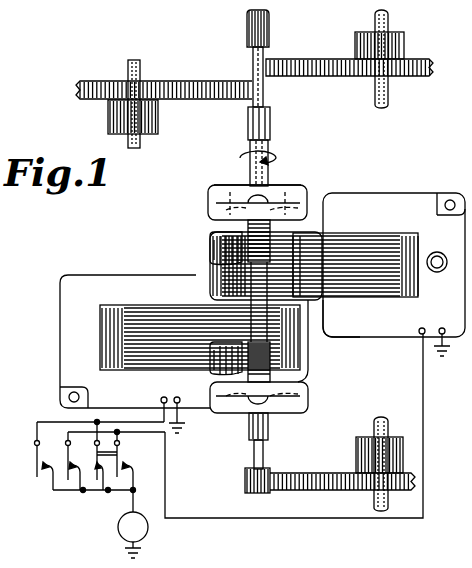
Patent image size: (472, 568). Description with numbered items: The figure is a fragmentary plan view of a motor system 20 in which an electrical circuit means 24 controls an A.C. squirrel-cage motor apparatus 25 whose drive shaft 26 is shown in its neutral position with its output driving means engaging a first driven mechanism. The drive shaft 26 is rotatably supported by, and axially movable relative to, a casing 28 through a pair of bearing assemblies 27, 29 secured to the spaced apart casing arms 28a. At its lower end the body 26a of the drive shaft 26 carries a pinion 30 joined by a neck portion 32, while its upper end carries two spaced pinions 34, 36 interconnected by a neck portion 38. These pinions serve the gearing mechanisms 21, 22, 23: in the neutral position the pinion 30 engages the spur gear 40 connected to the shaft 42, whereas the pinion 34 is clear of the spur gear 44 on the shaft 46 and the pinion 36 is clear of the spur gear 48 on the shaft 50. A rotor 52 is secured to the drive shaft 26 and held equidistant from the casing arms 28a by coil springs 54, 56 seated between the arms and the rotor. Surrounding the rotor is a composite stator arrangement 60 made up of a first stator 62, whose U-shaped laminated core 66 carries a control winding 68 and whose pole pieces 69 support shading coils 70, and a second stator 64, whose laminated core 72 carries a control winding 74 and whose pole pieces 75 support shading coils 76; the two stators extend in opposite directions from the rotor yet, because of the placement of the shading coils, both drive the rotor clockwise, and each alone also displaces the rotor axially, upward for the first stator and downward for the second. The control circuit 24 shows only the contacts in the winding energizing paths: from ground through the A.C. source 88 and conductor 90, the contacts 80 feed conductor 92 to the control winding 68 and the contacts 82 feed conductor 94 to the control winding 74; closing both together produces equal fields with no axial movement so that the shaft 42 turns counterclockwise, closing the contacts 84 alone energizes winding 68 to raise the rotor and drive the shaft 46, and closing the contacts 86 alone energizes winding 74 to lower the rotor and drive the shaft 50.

The motor system 20 is at (243, 290).
The gearing mechanism 21 is at (308, 456).
The gearing mechanism 22 is at (256, 79).
The gearing mechanism 23 is at (324, 57).
The electrical circuit means 24 is at (90, 489).
The motor apparatus 25 is at (237, 289).
The drive shaft 26 is at (249, 156).
The body of the drive shaft 26a is at (248, 430).
The bearing assembly 27 is at (212, 190).
The casing 28 is at (248, 185).
The casing arms 28a is at (317, 186).
The bearing assembly 29 is at (308, 392).
The pinion 30 is at (247, 480).
The neck portion 32 is at (253, 458).
The pinion 34 is at (247, 121).
The pinion 36 is at (247, 23).
The neck portion 38 is at (252, 56).
The spur gear 40 is at (330, 473).
The shaft 42 is at (383, 421).
The spur gear 44 is at (110, 80).
The shaft 46 is at (141, 40).
The spur gear 48 is at (296, 58).
The shaft 50 is at (388, 16).
The rotor 52 is at (212, 244).
The coil spring 54 is at (228, 235).
The coil spring 56 is at (302, 359).
The composite stator arrangement 60 is at (358, 353).
The first stator 62 is at (367, 245).
The second stator 64 is at (162, 309).
The laminated core 66 is at (345, 240).
The control winding 68 is at (387, 255).
The pole piece 69 is at (300, 234).
The shading coil 70 is at (210, 252).
The laminated core 72 is at (98, 337).
The control winding 74 is at (63, 364).
The pole piece 75 is at (186, 388).
The shading coil 76 is at (310, 338).
The contacts 80 is at (121, 461).
The contacts 82 is at (87, 470).
The contacts 84 is at (78, 461).
The contacts 86 is at (48, 456).
The A.C. source 88 is at (118, 525).
The conductor 90 is at (152, 486).
The conductor 92 is at (240, 518).
The conductor 94 is at (158, 410).